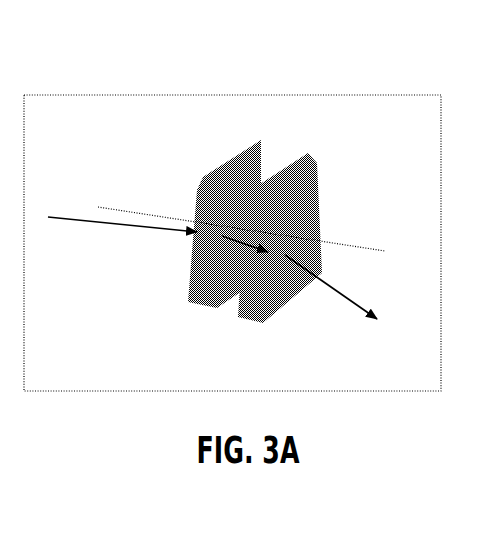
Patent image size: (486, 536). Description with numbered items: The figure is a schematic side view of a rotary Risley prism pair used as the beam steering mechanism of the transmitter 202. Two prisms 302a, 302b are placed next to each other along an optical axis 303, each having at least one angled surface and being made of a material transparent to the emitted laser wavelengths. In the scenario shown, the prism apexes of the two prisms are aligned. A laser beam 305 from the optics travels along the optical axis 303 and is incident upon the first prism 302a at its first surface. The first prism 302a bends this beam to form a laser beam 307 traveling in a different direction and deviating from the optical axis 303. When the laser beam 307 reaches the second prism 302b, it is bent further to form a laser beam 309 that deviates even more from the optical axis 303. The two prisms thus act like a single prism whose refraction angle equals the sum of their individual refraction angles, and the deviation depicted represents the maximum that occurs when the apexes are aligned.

The transmitter 202 is at (232, 94).
The first prism 302a is at (218, 176).
The second prism 302b is at (291, 170).
The optical axis 303 is at (125, 208).
The laser beam 305 is at (97, 222).
The laser beam 307 is at (235, 240).
The laser beam 309 is at (320, 279).